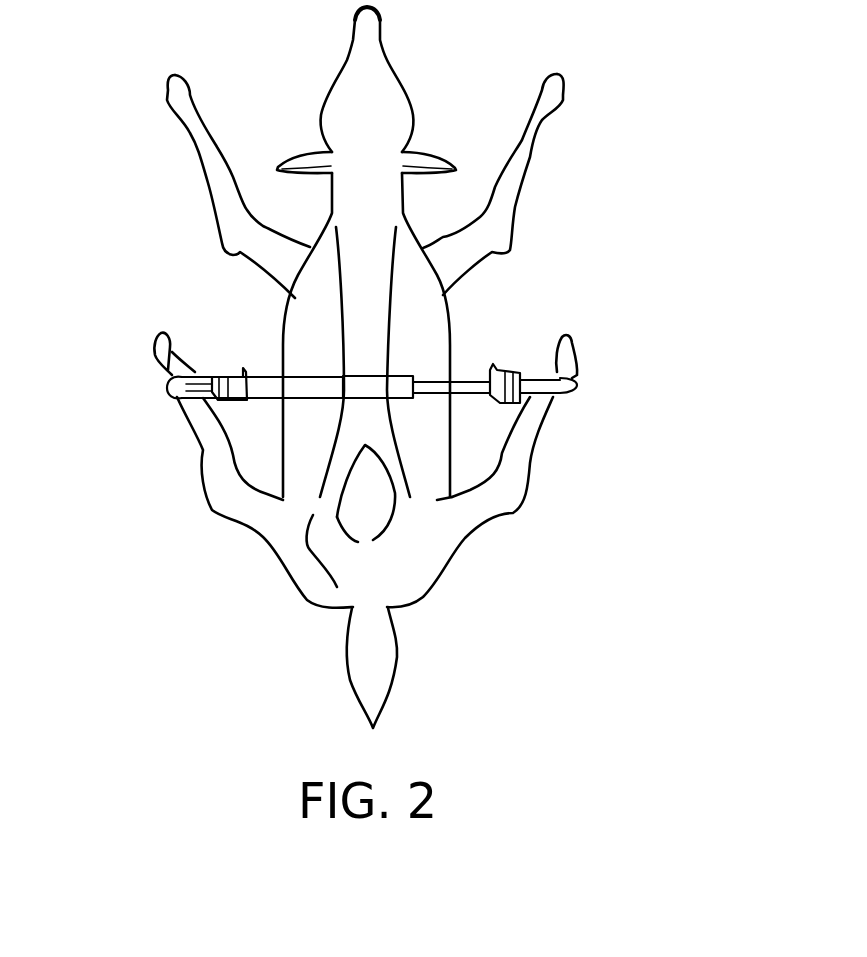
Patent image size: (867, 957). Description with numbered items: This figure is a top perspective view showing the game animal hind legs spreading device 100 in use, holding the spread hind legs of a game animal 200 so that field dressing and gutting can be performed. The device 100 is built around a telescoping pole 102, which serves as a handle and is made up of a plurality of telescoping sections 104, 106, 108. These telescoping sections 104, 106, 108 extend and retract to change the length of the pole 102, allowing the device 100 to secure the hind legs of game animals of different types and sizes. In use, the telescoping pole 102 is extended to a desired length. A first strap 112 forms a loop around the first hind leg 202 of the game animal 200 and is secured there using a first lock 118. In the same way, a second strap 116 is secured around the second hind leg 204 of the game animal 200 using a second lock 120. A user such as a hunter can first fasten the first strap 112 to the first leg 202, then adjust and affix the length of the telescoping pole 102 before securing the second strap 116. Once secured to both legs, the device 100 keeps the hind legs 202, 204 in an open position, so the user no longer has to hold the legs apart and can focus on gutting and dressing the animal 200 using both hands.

The game animal hind legs spreading device 100 is at (481, 337).
The telescoping pole 102 is at (368, 413).
The telescoping section 104 is at (257, 388).
The telescoping section 106 is at (378, 389).
The telescoping section 108 is at (472, 388).
The first strap 112 is at (167, 388).
The second strap 116 is at (578, 357).
The first lock 118 is at (212, 370).
The second lock 120 is at (515, 377).
The game animal 200 is at (266, 306).
The first hind leg 202 is at (207, 450).
The second hind leg 204 is at (535, 425).